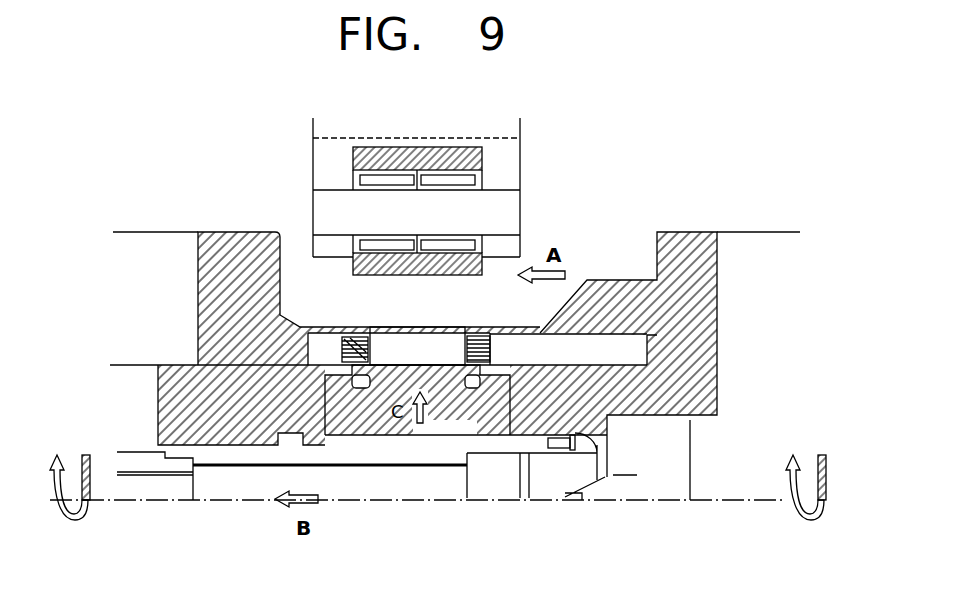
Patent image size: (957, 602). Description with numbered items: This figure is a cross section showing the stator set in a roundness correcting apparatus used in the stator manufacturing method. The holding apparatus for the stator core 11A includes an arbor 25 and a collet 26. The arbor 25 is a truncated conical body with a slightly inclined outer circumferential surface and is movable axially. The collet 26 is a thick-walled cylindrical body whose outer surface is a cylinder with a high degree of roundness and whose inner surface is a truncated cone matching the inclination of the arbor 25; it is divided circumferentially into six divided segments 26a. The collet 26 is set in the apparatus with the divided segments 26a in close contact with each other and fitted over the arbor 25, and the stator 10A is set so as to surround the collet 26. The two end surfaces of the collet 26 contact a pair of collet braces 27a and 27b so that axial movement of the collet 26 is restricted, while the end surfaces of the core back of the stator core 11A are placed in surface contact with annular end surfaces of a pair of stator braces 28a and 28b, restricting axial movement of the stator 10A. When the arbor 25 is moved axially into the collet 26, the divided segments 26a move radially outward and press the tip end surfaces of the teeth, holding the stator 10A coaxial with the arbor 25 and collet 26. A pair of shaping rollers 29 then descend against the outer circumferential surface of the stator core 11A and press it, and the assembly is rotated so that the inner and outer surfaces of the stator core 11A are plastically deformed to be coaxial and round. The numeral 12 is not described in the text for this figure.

The stator 10A is at (275, 153).
The stator core 11A is at (392, 333).
The rolling bearing 12 is at (347, 332).
The arbor 25 is at (385, 457).
The collet 26 is at (452, 438).
The divided segments 26a is at (483, 427).
The collet brace 27a is at (178, 372).
The collet brace 27b is at (645, 380).
The stator brace 28a is at (207, 288).
The stator brace 28b is at (627, 290).
The shaping rollers 29 is at (470, 161).